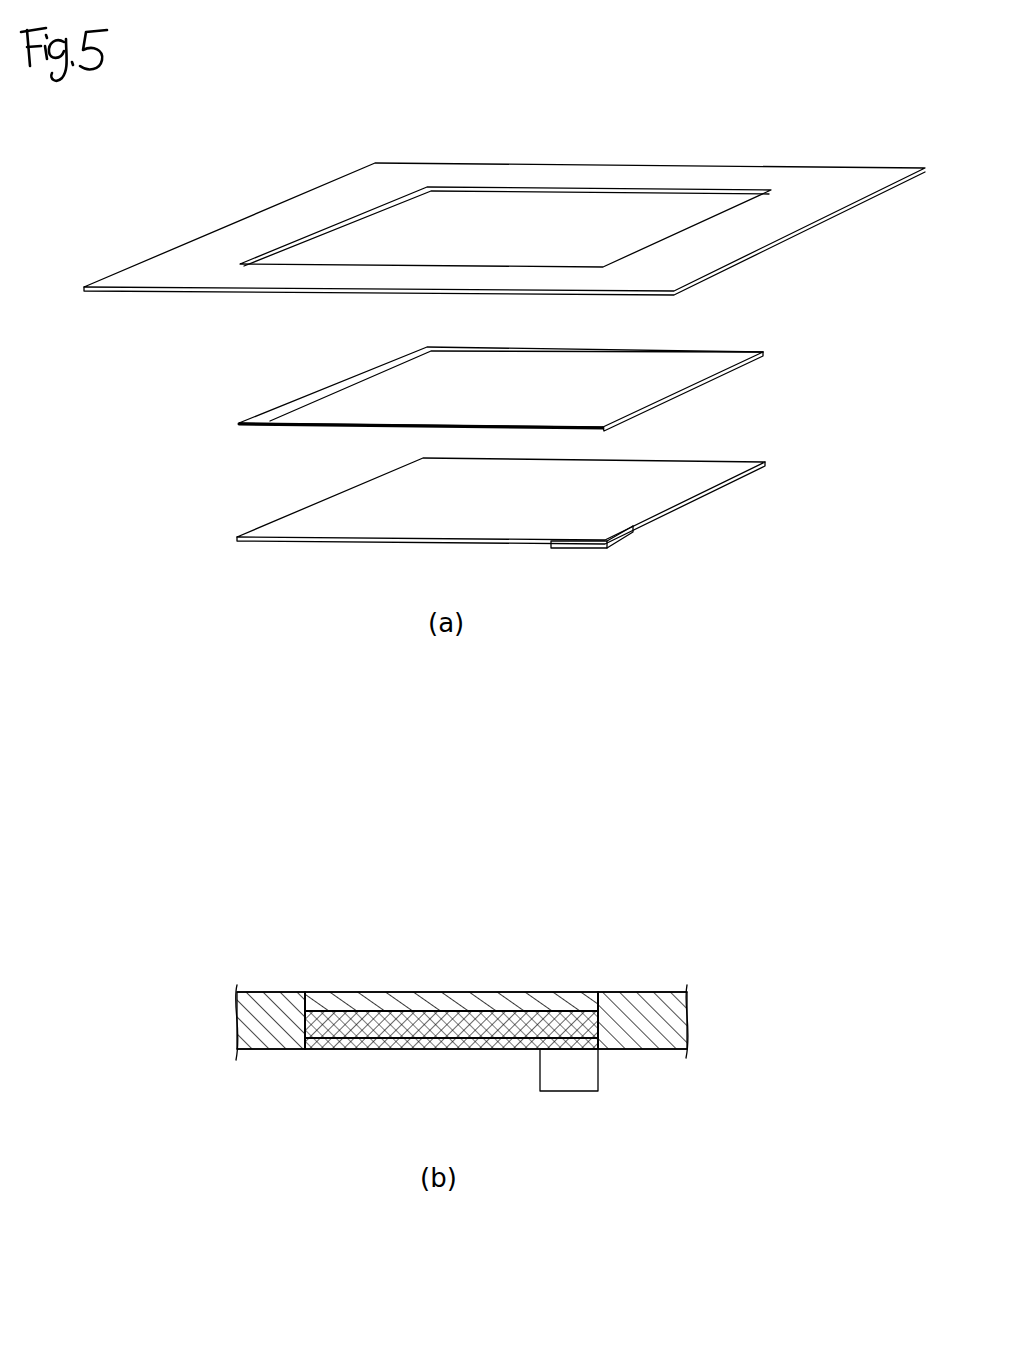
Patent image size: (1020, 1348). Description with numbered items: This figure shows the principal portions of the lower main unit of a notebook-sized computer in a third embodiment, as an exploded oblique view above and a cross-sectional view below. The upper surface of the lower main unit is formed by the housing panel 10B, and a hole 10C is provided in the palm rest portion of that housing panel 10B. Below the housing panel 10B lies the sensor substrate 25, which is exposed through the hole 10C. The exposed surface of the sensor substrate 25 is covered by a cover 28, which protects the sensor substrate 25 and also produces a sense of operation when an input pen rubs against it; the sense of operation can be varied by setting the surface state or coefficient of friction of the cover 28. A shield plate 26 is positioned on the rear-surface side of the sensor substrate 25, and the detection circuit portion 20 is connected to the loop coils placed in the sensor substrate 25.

The housing panel 10B is at (700, 173).
The hole 10C is at (590, 210).
The cover 28 is at (752, 353).
The shield plate 26 is at (350, 1050).
The sensor substrate 25 is at (694, 497).
The detection circuit portion 20 is at (592, 550).